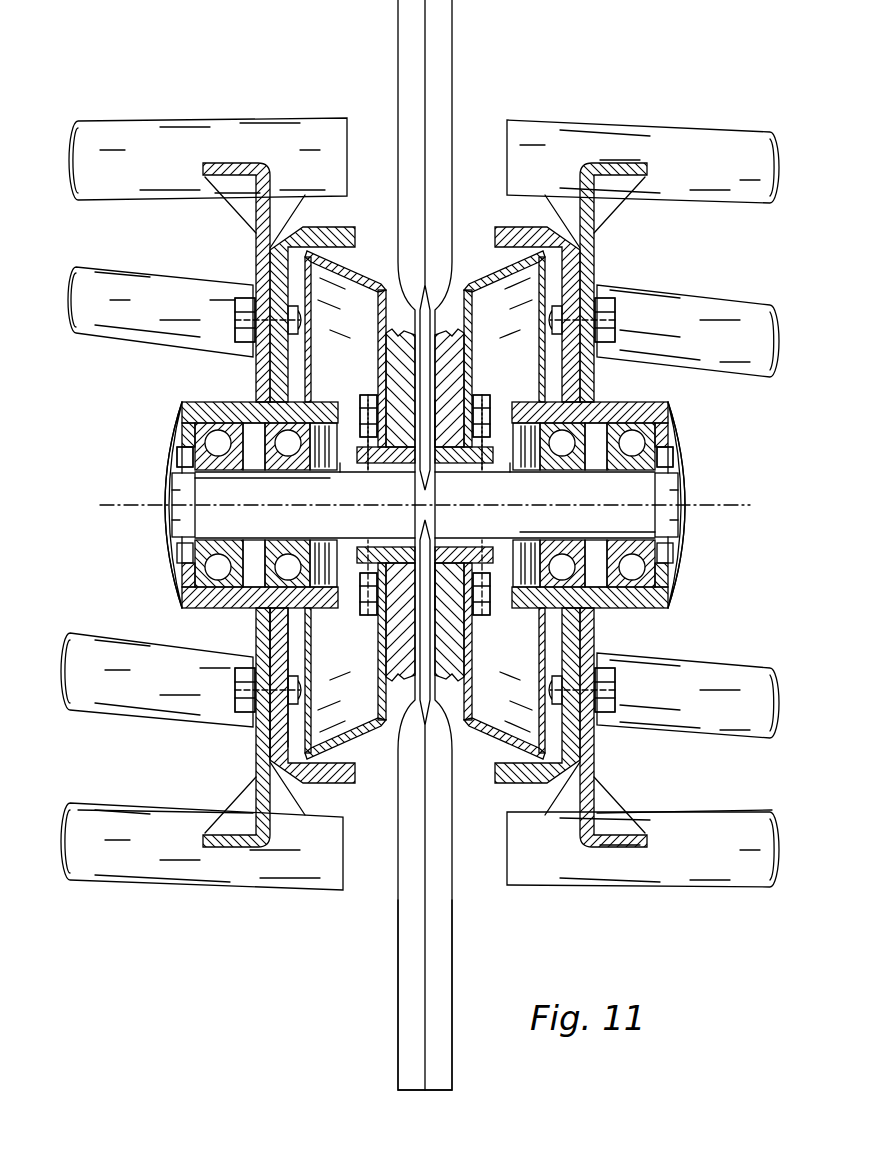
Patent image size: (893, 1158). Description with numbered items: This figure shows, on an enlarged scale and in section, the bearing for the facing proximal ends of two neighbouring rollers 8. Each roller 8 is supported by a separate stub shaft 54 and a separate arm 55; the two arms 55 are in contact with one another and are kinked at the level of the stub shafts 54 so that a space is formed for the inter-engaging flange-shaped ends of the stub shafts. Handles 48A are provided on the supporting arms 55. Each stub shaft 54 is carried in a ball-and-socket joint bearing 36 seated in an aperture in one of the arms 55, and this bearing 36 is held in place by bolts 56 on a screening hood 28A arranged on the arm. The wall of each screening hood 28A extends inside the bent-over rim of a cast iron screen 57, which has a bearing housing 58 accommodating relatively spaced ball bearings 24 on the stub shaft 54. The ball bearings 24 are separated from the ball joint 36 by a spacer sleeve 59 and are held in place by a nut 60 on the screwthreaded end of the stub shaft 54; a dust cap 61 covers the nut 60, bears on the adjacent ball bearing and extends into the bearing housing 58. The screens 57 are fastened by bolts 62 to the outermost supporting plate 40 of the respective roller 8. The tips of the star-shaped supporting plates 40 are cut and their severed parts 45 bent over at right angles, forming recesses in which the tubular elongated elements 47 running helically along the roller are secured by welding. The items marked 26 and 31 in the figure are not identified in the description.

The roller 8 is at (203, 903).
The ball bearings 24 is at (305, 474).
The hub 26 is at (400, 496).
The screening hood 28A is at (368, 324).
The axle journal 31 is at (330, 480).
The ball-and-socket joint bearing 36 is at (452, 478).
The supporting plate 40 is at (253, 745).
The bent-over parts 45 is at (215, 165).
The tubular elongated elements 47 is at (290, 120).
The handles 48A is at (424, 926).
The stub shaft 54 is at (178, 498).
The arm 55 is at (437, 20).
The bolts 56 is at (362, 395).
The cast iron screen 57 is at (325, 227).
The bearing housing 58 is at (303, 403).
The spacer sleeve 59 is at (348, 474).
The nut 60 is at (175, 454).
The dust cap 61 is at (158, 526).
The bolts 62 is at (233, 318).